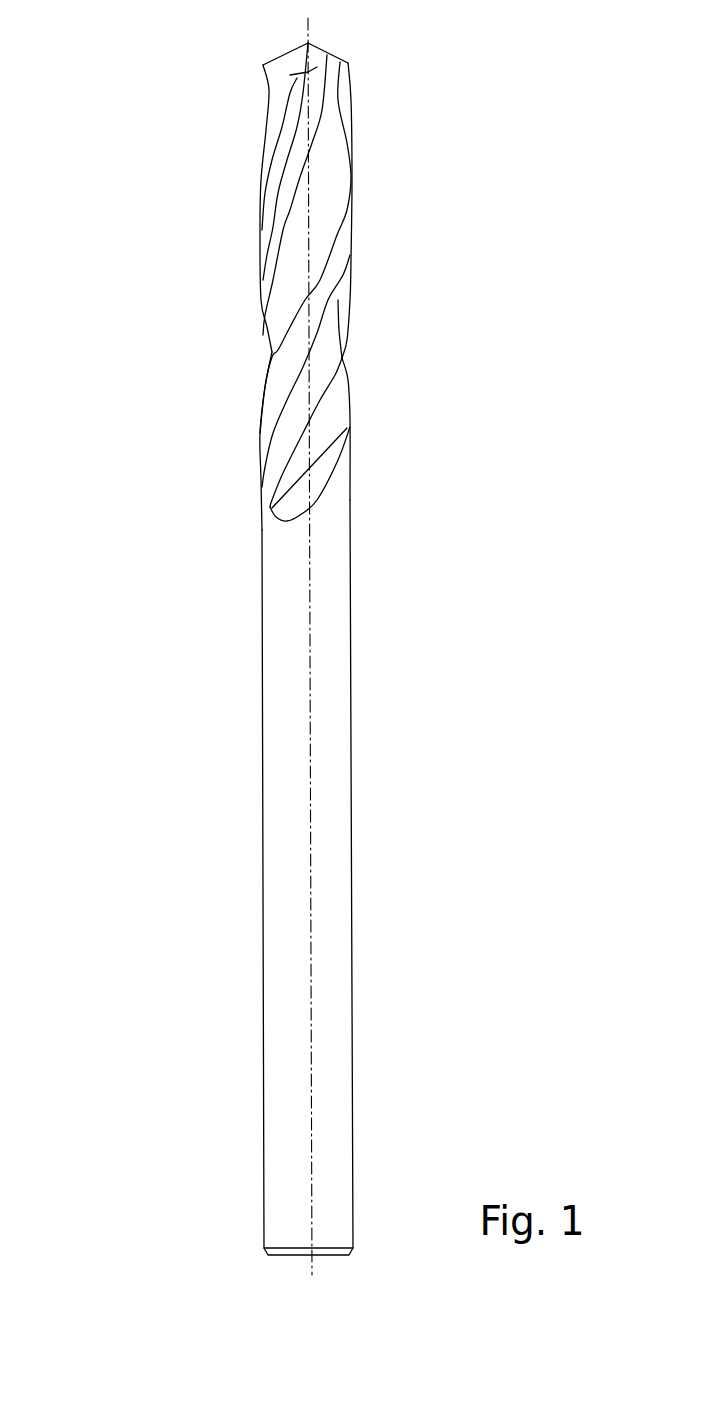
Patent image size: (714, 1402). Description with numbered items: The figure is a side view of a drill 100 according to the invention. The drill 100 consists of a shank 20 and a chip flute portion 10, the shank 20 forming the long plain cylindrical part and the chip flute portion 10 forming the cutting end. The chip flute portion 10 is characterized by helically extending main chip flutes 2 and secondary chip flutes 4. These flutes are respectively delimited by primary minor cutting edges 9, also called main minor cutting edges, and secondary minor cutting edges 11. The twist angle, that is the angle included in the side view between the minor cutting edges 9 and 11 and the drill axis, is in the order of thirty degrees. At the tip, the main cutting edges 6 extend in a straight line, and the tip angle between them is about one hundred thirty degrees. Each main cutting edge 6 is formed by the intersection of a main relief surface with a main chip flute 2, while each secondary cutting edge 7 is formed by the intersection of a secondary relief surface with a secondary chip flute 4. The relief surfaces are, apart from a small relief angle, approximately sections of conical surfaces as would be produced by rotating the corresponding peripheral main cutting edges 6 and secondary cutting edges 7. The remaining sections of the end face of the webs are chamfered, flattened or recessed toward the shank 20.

The drill 100 is at (164, 689).
The main chip flute 2 is at (322, 221).
The secondary chip flute 4 is at (290, 143).
The main cutting edge 6 is at (277, 56).
The secondary cutting edge 7 is at (322, 69).
The primary minor cutting edge 9 is at (320, 154).
The chip flute portion 10 is at (366, 364).
The secondary minor cutting edge 11 is at (300, 98).
The shank 20 is at (330, 871).